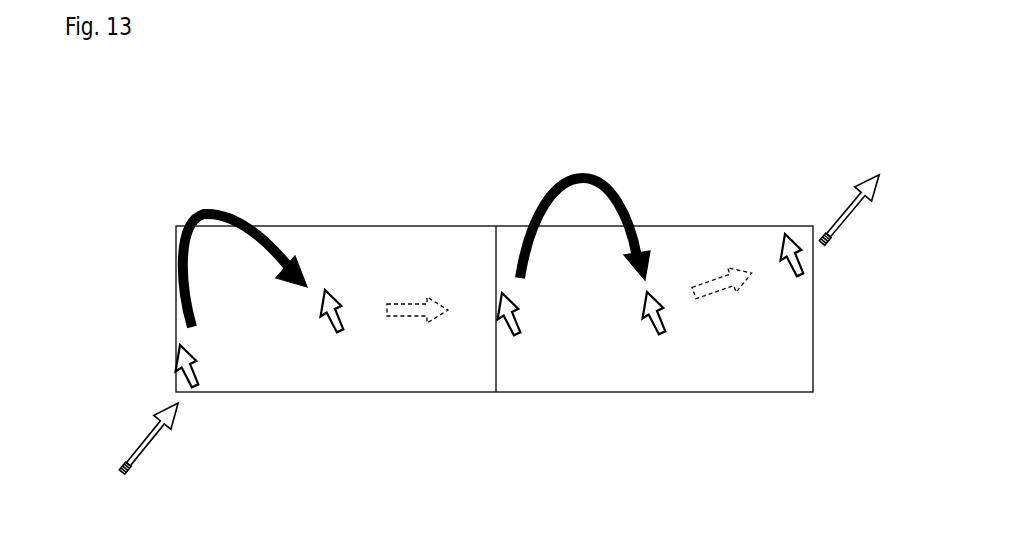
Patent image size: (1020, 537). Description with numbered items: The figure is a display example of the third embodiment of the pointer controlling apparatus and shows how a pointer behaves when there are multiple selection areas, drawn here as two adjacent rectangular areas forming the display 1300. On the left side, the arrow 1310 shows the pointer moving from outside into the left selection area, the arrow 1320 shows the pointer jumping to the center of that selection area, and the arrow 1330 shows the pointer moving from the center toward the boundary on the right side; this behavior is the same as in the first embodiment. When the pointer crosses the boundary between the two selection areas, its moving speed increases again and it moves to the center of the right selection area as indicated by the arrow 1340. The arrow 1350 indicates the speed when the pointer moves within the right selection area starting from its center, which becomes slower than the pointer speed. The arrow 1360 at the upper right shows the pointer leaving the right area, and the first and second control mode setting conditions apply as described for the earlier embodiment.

The display screen 1300 is at (515, 508).
The arrow 1310 is at (148, 434).
The arrow 1320 is at (203, 211).
The arrow 1330 is at (417, 302).
The arrow 1340 is at (582, 176).
The arrow 1350 is at (713, 285).
The stylus pen 1360 is at (842, 211).